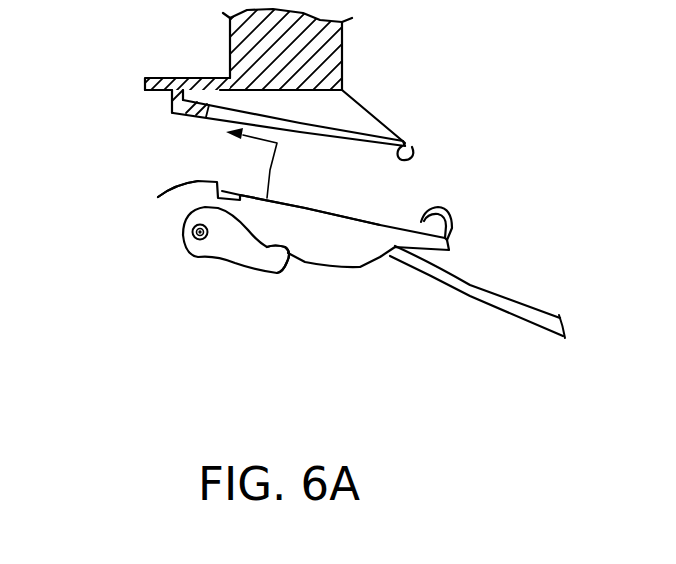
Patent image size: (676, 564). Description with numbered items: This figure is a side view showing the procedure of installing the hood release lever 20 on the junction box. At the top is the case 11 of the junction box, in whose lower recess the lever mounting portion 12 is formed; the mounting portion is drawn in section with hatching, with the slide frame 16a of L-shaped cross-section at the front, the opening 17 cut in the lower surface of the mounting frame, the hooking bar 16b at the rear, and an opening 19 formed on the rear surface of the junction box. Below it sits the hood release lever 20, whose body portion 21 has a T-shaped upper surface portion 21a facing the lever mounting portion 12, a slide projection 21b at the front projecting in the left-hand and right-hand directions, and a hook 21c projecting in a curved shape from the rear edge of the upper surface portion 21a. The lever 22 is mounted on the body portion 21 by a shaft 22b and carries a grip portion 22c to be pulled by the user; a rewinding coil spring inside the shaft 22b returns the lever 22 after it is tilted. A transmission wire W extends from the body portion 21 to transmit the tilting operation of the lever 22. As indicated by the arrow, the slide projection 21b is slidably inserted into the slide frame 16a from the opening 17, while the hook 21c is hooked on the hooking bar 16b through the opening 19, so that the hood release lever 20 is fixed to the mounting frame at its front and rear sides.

The case 11 is at (334, 58).
The lever mounting portion 12 is at (133, 102).
The slide frame 16a is at (177, 112).
The hooking bar 16b is at (417, 156).
The opening 17 is at (300, 133).
The opening 19 is at (360, 113).
The hood release lever 20 is at (312, 273).
The body portion 21 is at (312, 273).
The upper surface portion 21a is at (386, 224).
The slide projection 21b is at (160, 196).
The hook 21c is at (452, 213).
The lever 22 is at (181, 289).
The shaft 22b is at (194, 236).
The grip portion 22c is at (278, 266).
The transmission wire W is at (520, 308).